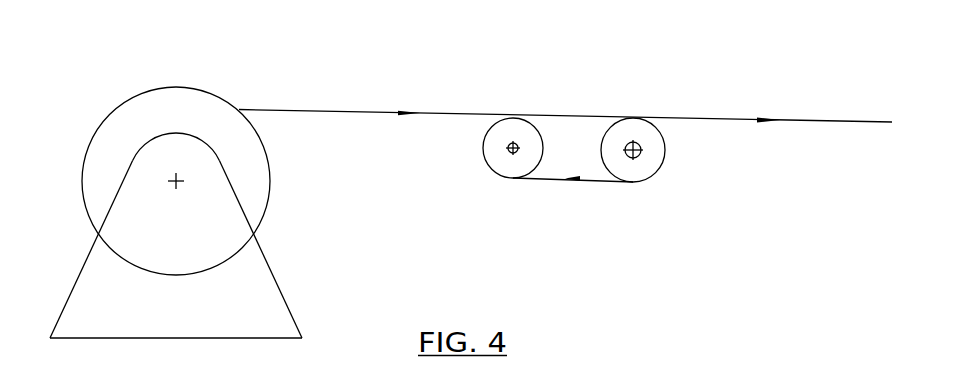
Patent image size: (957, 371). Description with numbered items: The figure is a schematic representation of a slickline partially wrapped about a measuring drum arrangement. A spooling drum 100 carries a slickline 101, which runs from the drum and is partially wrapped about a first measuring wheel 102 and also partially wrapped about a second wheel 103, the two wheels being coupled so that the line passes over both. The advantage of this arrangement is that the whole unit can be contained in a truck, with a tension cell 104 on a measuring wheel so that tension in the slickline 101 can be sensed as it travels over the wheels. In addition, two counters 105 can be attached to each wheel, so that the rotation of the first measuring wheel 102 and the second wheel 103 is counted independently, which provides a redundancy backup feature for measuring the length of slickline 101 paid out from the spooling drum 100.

The spooling drum 100 is at (140, 110).
The slickline 101 is at (313, 112).
The first measuring wheel 102 is at (662, 165).
The second wheel 103 is at (512, 179).
The tension cell 104 is at (510, 152).
The counters 105 is at (637, 158).